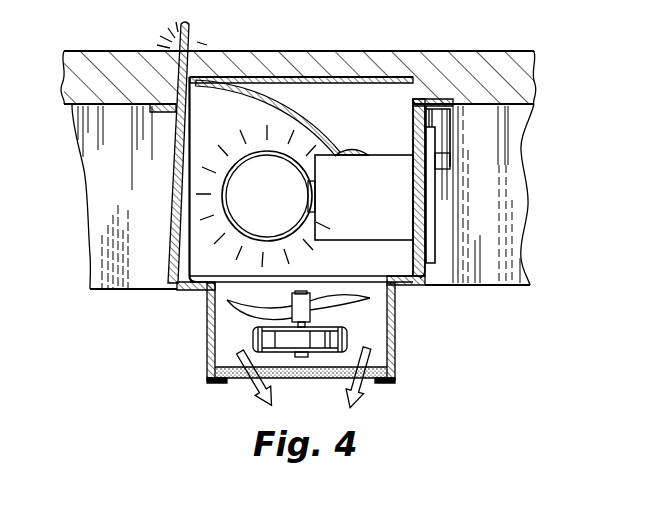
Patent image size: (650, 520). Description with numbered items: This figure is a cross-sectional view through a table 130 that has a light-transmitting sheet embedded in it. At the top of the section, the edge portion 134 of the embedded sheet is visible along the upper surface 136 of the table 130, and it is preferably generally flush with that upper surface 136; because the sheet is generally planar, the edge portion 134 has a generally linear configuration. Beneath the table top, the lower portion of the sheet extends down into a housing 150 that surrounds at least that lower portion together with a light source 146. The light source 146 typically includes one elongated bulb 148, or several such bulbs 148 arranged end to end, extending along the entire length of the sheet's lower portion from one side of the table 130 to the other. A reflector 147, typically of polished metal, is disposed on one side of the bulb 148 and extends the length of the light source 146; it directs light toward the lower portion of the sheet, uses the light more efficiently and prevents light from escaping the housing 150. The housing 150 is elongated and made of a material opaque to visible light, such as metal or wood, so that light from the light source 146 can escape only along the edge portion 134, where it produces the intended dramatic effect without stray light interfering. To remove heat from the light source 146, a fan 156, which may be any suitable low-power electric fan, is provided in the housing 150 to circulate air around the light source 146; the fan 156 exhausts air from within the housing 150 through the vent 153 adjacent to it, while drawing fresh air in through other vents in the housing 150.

The table 130 is at (368, 48).
The edge portion 134 is at (190, 44).
The upper surface 136 is at (472, 50).
The light source 146 is at (382, 204).
The reflector 147 is at (313, 116).
The bulb 148 is at (285, 206).
The housing 150 is at (428, 276).
The vent 153 is at (243, 383).
The fan 156 is at (245, 318).